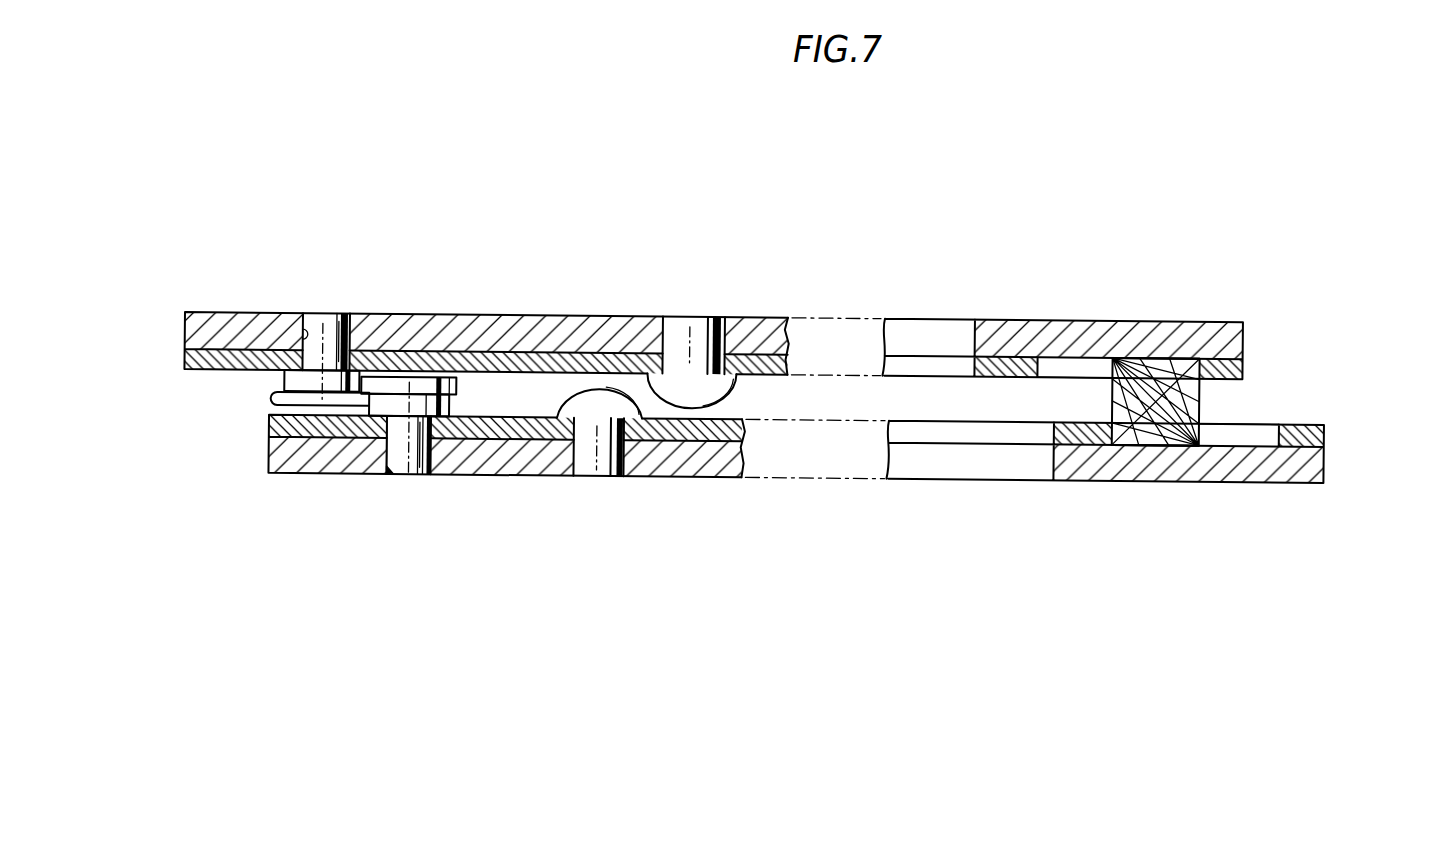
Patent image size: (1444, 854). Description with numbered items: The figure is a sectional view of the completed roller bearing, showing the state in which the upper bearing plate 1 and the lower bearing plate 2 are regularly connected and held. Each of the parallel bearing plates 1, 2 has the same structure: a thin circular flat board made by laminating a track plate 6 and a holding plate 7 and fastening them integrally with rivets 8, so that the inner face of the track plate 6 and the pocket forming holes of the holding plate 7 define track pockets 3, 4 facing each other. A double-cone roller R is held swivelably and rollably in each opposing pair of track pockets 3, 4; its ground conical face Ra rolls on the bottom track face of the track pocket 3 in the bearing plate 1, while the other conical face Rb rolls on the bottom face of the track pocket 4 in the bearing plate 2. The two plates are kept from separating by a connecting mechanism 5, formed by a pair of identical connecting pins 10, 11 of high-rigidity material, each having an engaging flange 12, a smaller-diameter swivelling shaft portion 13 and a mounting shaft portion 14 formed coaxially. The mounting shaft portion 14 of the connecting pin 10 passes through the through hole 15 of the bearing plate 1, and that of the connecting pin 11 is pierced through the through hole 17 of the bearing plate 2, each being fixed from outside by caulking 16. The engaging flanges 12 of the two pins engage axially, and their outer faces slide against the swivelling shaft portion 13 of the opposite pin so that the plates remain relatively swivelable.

The upper bearing plate 1 is at (1317, 269).
The lower bearing plate 2 is at (1380, 380).
The track pocket 3 is at (1062, 354).
The track pocket 4 is at (1240, 430).
The connecting mechanism 5 is at (257, 416).
The track plate 6 is at (1245, 322).
The holding plate 7 is at (1245, 357).
The rivet 8 is at (693, 320).
The connecting pin 10 is at (318, 312).
The connecting pin 11 is at (420, 475).
The engaging flange 12 is at (265, 402).
The swivelling shaft portion 13 is at (280, 376).
The mounting shaft portion 14 is at (353, 340).
The through hole 15 is at (300, 335).
The caulking 16 is at (348, 312).
The through hole 17 is at (388, 443).
The double-cone roller R is at (1203, 392).
The conical face Ra is at (1158, 349).
The conical face Rb is at (1157, 437).